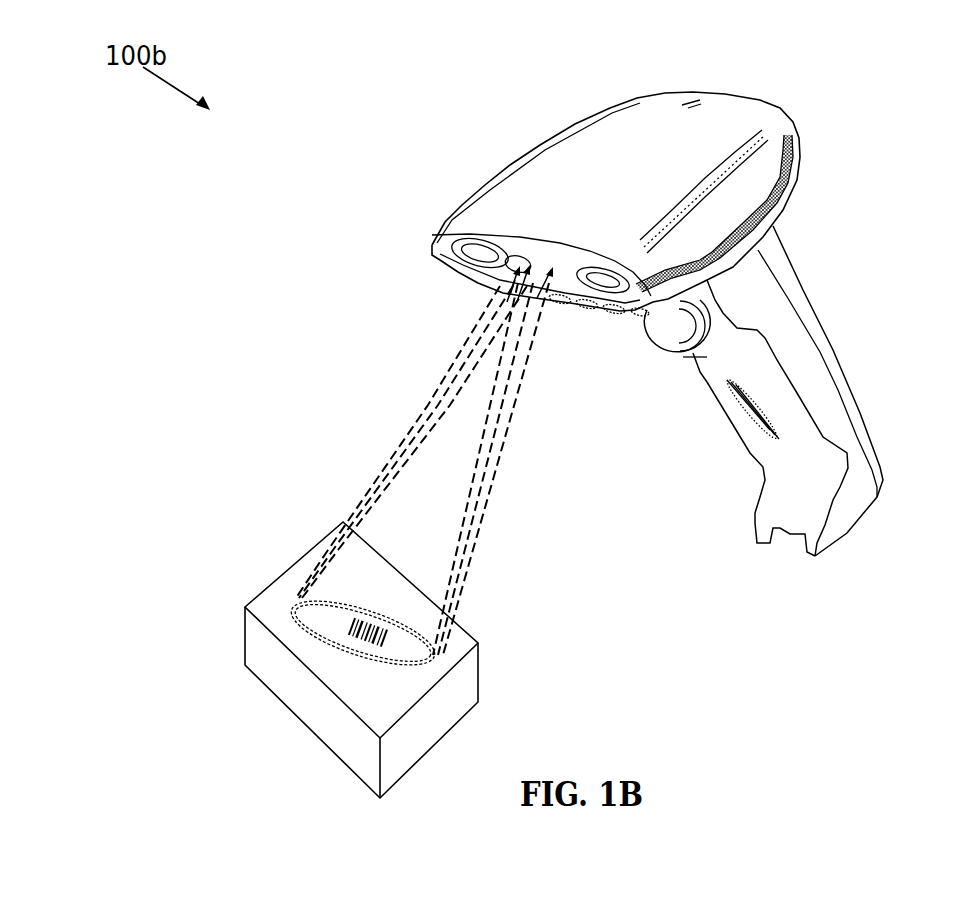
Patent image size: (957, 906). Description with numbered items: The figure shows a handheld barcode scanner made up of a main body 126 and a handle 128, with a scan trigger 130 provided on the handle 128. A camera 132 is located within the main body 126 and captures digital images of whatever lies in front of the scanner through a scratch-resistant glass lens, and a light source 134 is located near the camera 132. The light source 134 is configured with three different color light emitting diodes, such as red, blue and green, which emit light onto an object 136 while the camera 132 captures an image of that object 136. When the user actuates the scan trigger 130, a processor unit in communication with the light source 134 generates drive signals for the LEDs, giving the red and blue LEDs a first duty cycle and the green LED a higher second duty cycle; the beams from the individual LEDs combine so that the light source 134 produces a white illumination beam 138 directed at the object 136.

The main body 126 is at (652, 130).
The handle 128 is at (790, 353).
The scan trigger 130 is at (672, 328).
The camera 132 is at (600, 278).
The light source 134 is at (512, 268).
The object 136 is at (290, 583).
The white illumination beam 138 is at (377, 485).